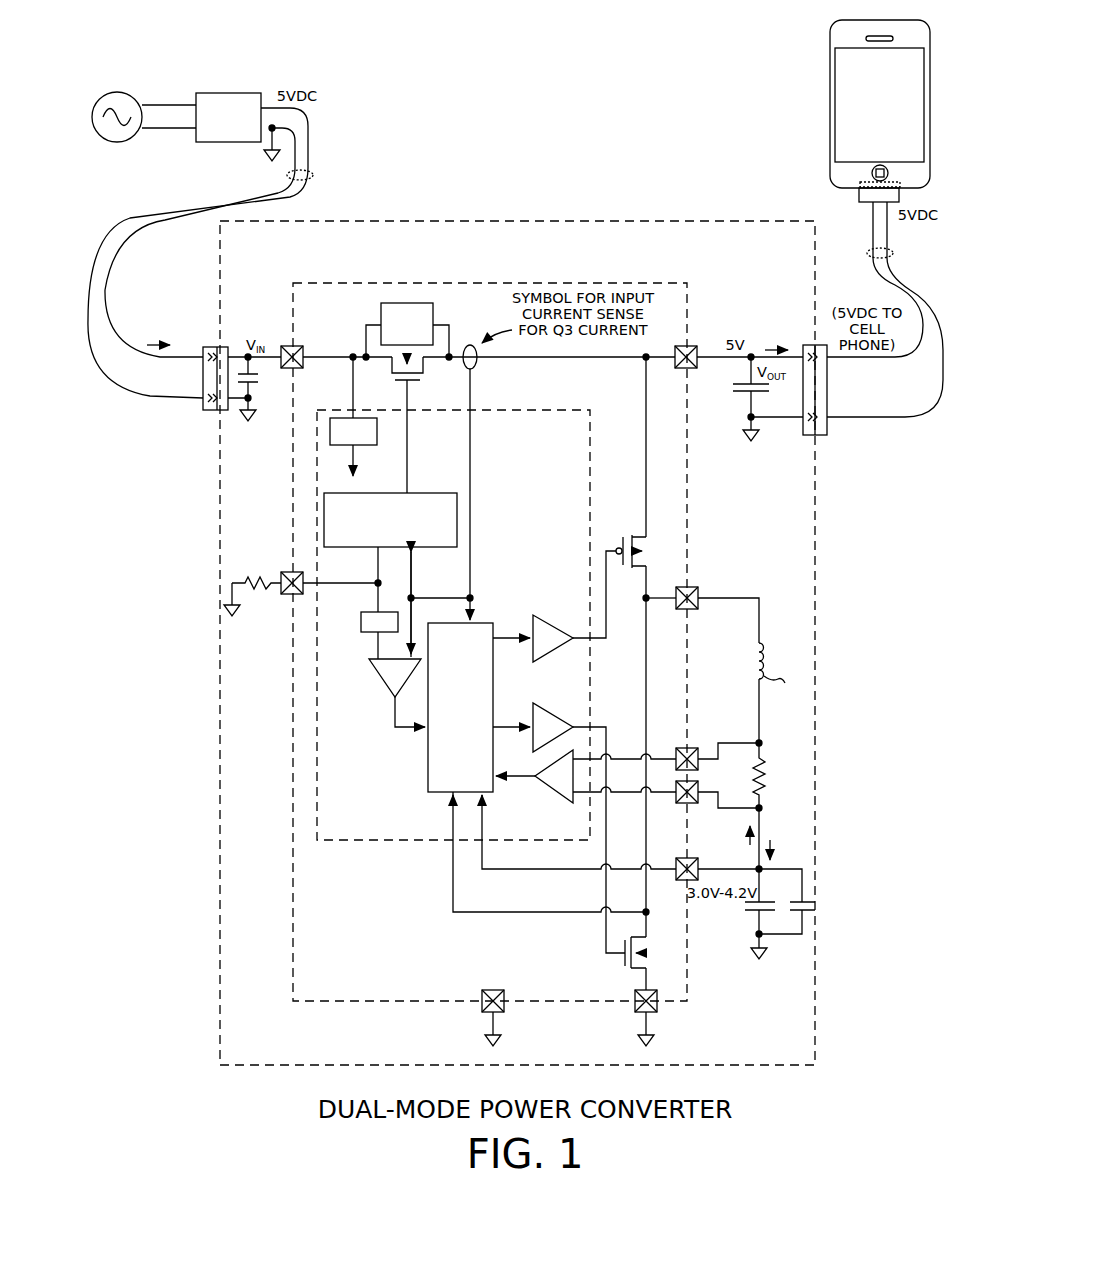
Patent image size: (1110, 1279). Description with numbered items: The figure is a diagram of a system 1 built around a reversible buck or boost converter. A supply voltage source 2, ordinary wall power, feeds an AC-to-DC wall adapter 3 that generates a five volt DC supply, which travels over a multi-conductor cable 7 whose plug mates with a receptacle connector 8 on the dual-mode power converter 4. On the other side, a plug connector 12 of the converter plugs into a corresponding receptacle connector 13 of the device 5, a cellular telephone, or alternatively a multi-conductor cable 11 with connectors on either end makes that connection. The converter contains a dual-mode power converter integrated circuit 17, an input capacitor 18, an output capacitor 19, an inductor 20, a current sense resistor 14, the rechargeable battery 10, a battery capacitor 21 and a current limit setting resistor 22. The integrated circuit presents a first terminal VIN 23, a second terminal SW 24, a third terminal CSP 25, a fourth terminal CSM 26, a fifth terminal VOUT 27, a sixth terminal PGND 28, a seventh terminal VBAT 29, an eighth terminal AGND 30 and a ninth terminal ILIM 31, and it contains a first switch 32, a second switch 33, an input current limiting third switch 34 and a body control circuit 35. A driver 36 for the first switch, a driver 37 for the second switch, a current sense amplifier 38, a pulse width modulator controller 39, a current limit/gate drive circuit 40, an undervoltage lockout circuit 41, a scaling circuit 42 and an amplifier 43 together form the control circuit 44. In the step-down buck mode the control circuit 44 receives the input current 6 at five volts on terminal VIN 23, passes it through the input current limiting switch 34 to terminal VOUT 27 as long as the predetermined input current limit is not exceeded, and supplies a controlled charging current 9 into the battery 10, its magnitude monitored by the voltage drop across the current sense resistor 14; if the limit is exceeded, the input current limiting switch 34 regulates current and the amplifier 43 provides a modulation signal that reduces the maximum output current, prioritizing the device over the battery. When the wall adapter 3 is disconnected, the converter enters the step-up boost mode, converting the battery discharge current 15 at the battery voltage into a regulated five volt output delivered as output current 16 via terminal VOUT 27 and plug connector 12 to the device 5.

The system 1 is at (565, 74).
The supply voltage source 2 is at (116, 92).
The AC-to-DC wall adapter 3 is at (228, 93).
The dual-mode power converter 4 is at (522, 221).
The device 5 is at (830, 113).
The input current 6 is at (157, 345).
The multi-conductor cable 7 is at (313, 175).
The receptacle connector 8 is at (220, 412).
The charging current 9 is at (771, 847).
The rechargeable battery 10 is at (782, 916).
The multi-conductor cable 11 is at (893, 253).
The plug connector 12 is at (808, 437).
The receptacle connector 13 is at (859, 185).
The current sense resistor 14 is at (775, 778).
The discharge current 15 is at (752, 833).
The output current 16 is at (775, 350).
The dual-mode power converter integrated circuit 17 is at (485, 283).
The input capacitor 18 is at (262, 382).
The output capacitor 19 is at (743, 392).
The inductor 20 is at (775, 653).
The battery capacitor 21 is at (795, 900).
The current limit setting resistor 22 is at (258, 578).
The first terminal VIN 23 is at (298, 348).
The second terminal SW 24 is at (691, 587).
The third terminal CSP 25 is at (691, 749).
The fourth terminal CSM 26 is at (681, 803).
The fifth terminal VOUT 27 is at (694, 345).
The sixth terminal PGND 28 is at (636, 1010).
The seventh terminal VBAT 29 is at (680, 880).
The eighth terminal AGND 30 is at (488, 988).
The ninth terminal ILIM 31 is at (285, 594).
The first switch Q1 32 is at (636, 537).
The second switch Q2 33 is at (622, 963).
The input current limiting third switch Q3 34 is at (415, 383).
The body control circuit 35 is at (435, 313).
The driver 36 is at (554, 618).
The driver 37 is at (554, 706).
The current sense amplifier 38 is at (553, 795).
The pulse width modulator controller 39 is at (451, 760).
The current limit/gate drive circuit 40 is at (445, 547).
The undervoltage lockout circuit 41 is at (366, 447).
The scaling circuit 42 is at (368, 633).
The amplifier 43 is at (383, 684).
The control circuit 44 is at (380, 840).